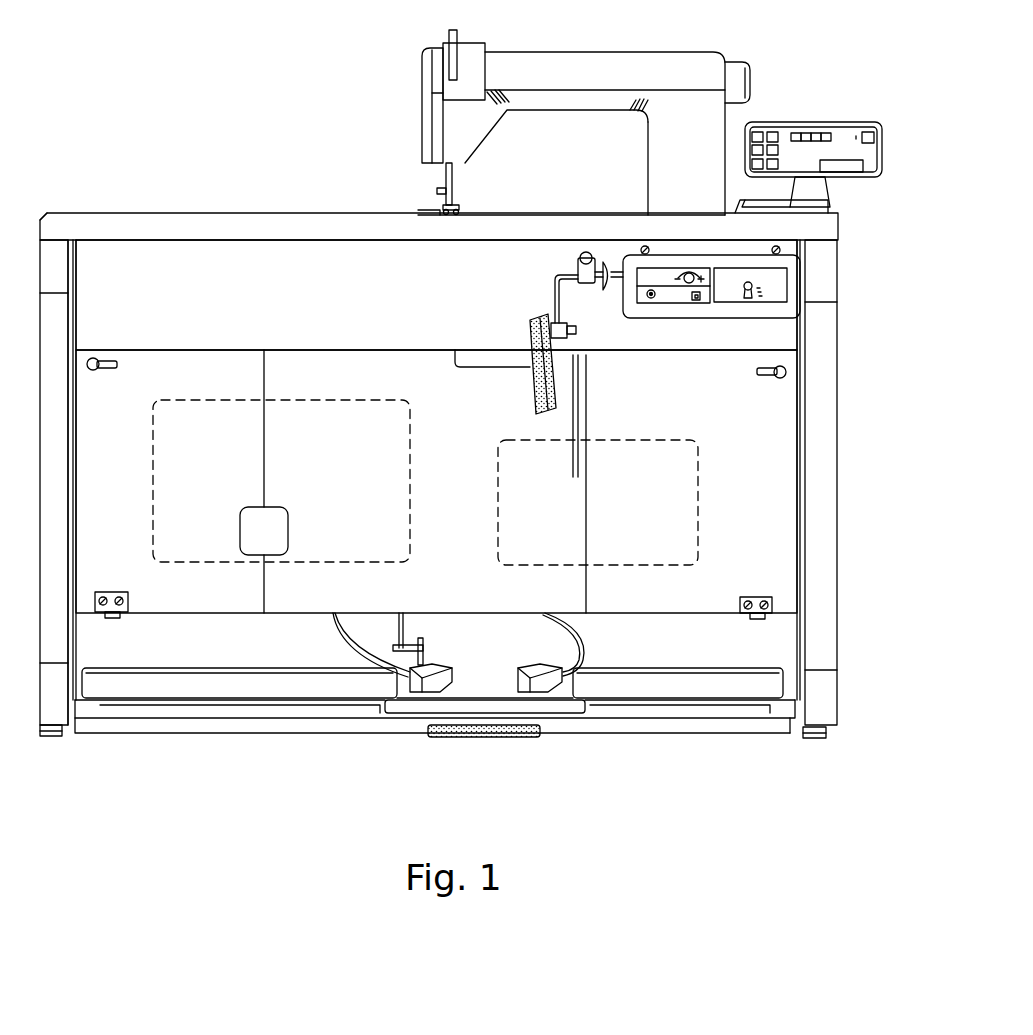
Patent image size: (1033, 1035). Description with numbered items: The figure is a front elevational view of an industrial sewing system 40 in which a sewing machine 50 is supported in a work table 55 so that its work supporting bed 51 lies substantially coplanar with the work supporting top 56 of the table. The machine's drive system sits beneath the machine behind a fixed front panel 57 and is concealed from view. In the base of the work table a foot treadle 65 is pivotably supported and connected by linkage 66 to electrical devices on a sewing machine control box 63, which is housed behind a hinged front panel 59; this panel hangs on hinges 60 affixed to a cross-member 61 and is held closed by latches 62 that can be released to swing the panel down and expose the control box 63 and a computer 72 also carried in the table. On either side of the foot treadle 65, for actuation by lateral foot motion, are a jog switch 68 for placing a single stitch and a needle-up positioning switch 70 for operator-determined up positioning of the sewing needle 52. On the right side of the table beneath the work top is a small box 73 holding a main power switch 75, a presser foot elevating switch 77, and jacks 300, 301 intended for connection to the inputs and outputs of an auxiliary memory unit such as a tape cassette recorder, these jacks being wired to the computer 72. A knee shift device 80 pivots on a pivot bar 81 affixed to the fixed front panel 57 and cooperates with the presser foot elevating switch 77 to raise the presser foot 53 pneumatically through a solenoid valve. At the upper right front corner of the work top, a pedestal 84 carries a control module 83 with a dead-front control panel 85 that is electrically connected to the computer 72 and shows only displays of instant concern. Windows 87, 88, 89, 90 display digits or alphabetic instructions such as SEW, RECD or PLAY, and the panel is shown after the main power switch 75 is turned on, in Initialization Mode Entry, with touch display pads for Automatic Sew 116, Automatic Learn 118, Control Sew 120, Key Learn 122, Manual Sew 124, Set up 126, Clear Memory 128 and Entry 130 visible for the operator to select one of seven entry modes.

The industrial sewing system 40 is at (422, 109).
The sewing machine 50 is at (536, 114).
The work supporting bed 51 is at (545, 214).
The sewing needle 52 is at (449, 205).
The presser foot 53 is at (460, 209).
The work table 55 is at (840, 382).
The work supporting top 56 is at (311, 213).
The fixed front panel 57 is at (288, 316).
The hinged front panel 59 is at (462, 528).
The hinges 60 is at (119, 618).
The cross-member 61 is at (74, 576).
The latches 62 is at (100, 360).
The sewing machine control box 63 is at (410, 478).
The foot treadle 65 is at (495, 672).
The linkage 66 is at (414, 631).
The jog switch 68 is at (562, 668).
The needle-up positioning switch 70 is at (440, 666).
The computer 72 is at (698, 524).
The box 73 is at (735, 318).
The main power switch 75 is at (752, 298).
The presser foot elevating switch 77 is at (612, 289).
The knee shift device 80 is at (556, 378).
The pivot bar 81 is at (576, 258).
The control module 83 is at (797, 115).
The pedestal 84 is at (832, 200).
The control panel 85 is at (857, 136).
The window 87 is at (797, 133).
The window 88 is at (806, 133).
The window 89 is at (816, 133).
The window 90 is at (826, 133).
The Automatic Sew display pad 116 is at (757, 132).
The Automatic Learn display pad 118 is at (772, 132).
The Control Sew display pad 120 is at (752, 148).
The Key Learn display pad 122 is at (778, 150).
The Manual Sew display pad 124 is at (752, 162).
The Set up display pad 126 is at (772, 170).
The Clear Memory display pad 128 is at (869, 132).
The Entry display pad 130 is at (850, 172).
The jack 300 is at (651, 299).
The jack 301 is at (696, 302).